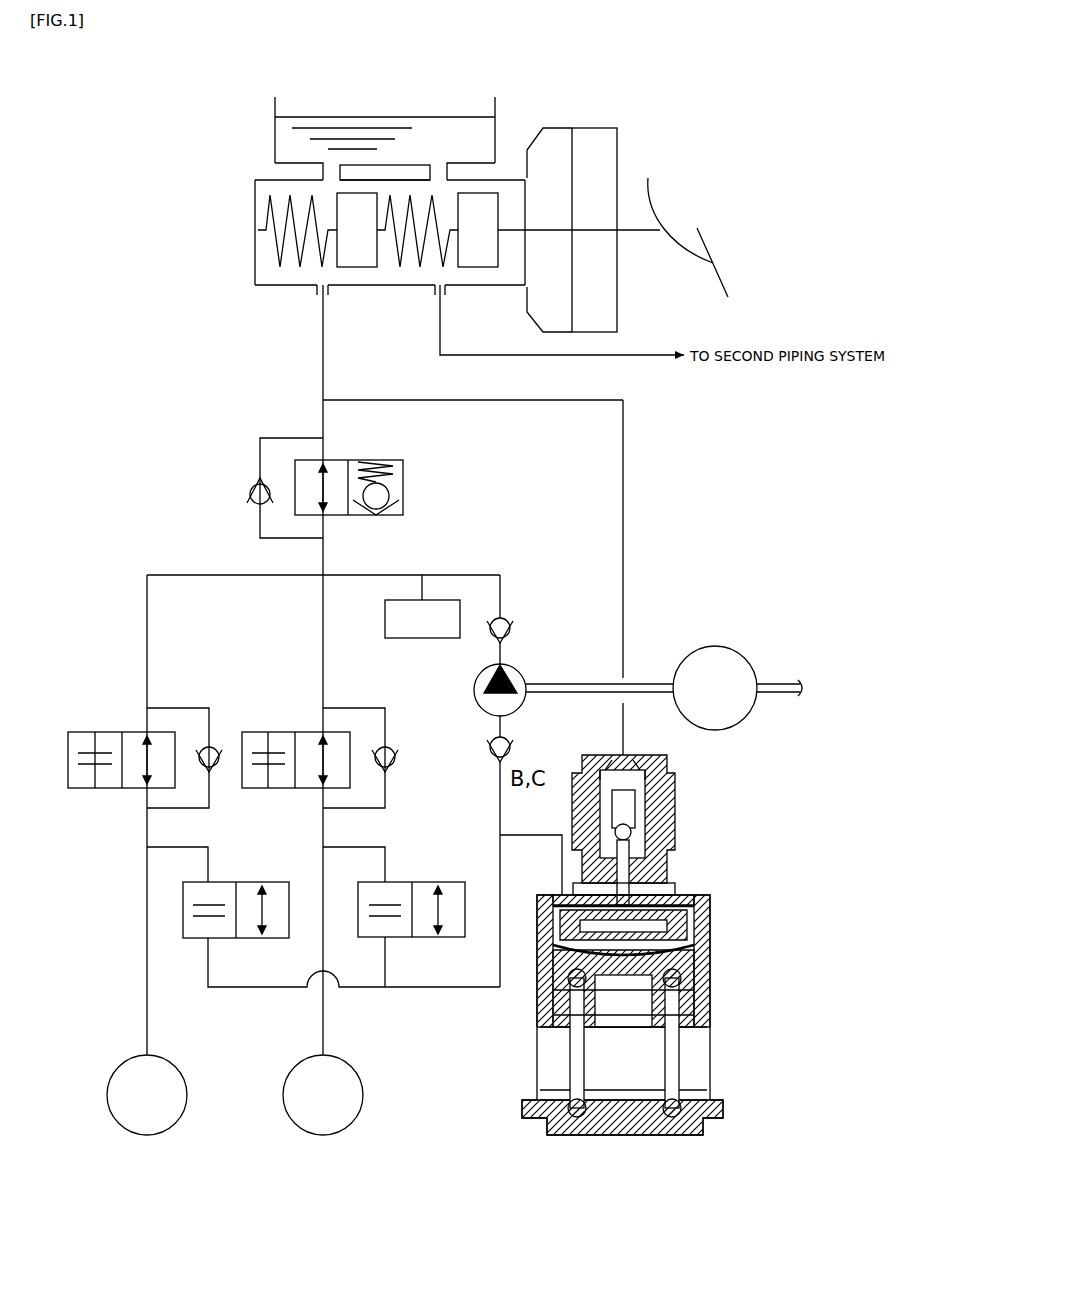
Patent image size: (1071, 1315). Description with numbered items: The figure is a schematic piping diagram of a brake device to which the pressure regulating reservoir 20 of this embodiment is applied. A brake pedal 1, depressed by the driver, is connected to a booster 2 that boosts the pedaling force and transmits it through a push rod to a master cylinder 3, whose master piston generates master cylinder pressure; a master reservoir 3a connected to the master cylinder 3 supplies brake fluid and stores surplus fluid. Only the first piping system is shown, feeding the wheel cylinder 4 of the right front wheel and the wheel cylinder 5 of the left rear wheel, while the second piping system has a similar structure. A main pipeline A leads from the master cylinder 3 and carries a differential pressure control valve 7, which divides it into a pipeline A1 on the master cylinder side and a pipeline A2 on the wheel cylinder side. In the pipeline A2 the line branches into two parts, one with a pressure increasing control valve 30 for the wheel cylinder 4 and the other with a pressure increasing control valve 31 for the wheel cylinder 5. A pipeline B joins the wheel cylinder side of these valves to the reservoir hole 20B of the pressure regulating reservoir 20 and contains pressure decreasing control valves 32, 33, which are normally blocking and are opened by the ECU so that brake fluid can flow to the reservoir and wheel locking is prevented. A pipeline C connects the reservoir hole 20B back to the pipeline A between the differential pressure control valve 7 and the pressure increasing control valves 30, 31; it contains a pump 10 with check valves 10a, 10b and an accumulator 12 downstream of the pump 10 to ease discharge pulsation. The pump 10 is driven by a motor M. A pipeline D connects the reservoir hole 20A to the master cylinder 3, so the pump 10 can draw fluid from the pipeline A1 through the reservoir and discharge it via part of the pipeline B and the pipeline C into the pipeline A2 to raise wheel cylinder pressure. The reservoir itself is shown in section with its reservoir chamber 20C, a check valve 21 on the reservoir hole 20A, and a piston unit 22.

The brake pedal 1 is at (654, 198).
The booster 2 is at (594, 128).
The master cylinder 3 is at (253, 251).
The master reservoir 3a is at (375, 117).
The wheel cylinder 4 is at (107, 1095).
The wheel cylinder 5 is at (283, 1095).
The differential pressure control valve 7 is at (405, 486).
The pump 10 is at (520, 667).
The check valve 10a is at (513, 621).
The check valve 10b is at (513, 741).
The accumulator 12 is at (385, 614).
The pressure regulating reservoir 20 is at (650, 938).
The reservoir hole 20A is at (658, 822).
The reservoir hole 20B is at (540, 903).
The reservoir chamber 20C is at (665, 915).
The check valve 21 is at (668, 818).
The piston unit 22 is at (697, 1031).
The pressure increasing control valve 30 is at (112, 732).
The pressure increasing control valve 31 is at (286, 732).
The pressure decreasing control valve 32 is at (277, 882).
The pressure decreasing control valve 33 is at (451, 882).
The main pipeline A is at (320, 340).
The pipeline A1 is at (323, 418).
The pipeline A2 is at (147, 609).
The pipeline B is at (278, 990).
The pipeline C is at (460, 575).
The pipeline D is at (625, 545).
The motor M is at (715, 688).